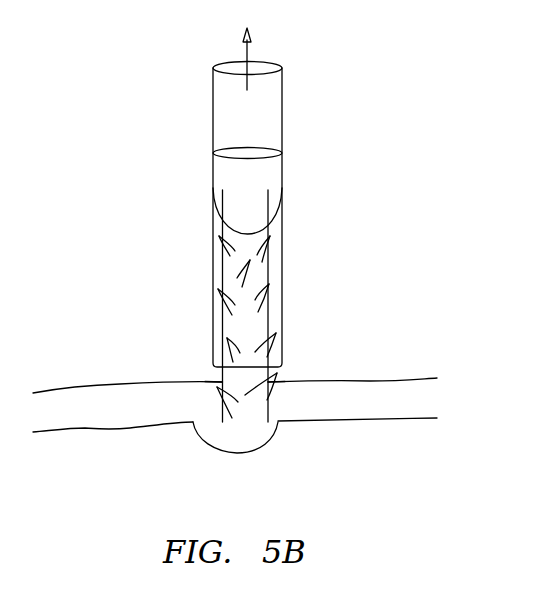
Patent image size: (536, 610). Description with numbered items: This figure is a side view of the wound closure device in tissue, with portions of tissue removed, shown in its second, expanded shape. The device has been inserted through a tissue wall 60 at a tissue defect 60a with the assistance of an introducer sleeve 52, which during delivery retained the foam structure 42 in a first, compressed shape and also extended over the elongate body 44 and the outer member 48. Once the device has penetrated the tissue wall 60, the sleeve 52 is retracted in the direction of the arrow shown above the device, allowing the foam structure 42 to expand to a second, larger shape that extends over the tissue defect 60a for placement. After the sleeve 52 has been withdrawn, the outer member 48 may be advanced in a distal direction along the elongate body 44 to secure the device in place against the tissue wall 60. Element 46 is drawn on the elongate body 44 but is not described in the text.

The foam structure 42 is at (257, 437).
The elongate body 44 is at (256, 326).
The barbs 46 is at (237, 350).
The outer member 48 is at (261, 184).
The sleeve 52 is at (283, 257).
The tissue wall 60 is at (403, 398).
The tissue defect 60a is at (213, 413).